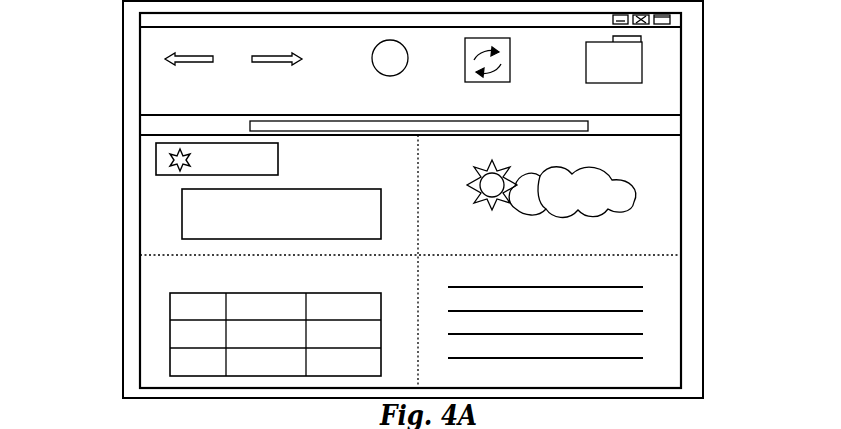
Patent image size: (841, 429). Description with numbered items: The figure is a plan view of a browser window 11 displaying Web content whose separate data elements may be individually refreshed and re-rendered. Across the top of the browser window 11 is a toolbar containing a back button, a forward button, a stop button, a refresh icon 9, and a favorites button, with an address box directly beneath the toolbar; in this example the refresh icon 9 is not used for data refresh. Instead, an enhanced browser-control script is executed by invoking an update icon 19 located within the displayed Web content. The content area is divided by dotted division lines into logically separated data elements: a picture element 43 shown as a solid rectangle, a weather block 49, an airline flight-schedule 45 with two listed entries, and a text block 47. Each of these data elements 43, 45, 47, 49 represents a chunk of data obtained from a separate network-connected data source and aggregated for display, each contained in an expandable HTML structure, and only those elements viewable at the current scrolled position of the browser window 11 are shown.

The browser window 11 is at (121, 313).
The refresh icon 9 is at (512, 80).
The update icon 19 is at (156, 165).
The picture element 43 is at (158, 236).
The airline flight-schedule 45 is at (164, 348).
The text block 47 is at (655, 346).
The weather block 49 is at (660, 227).